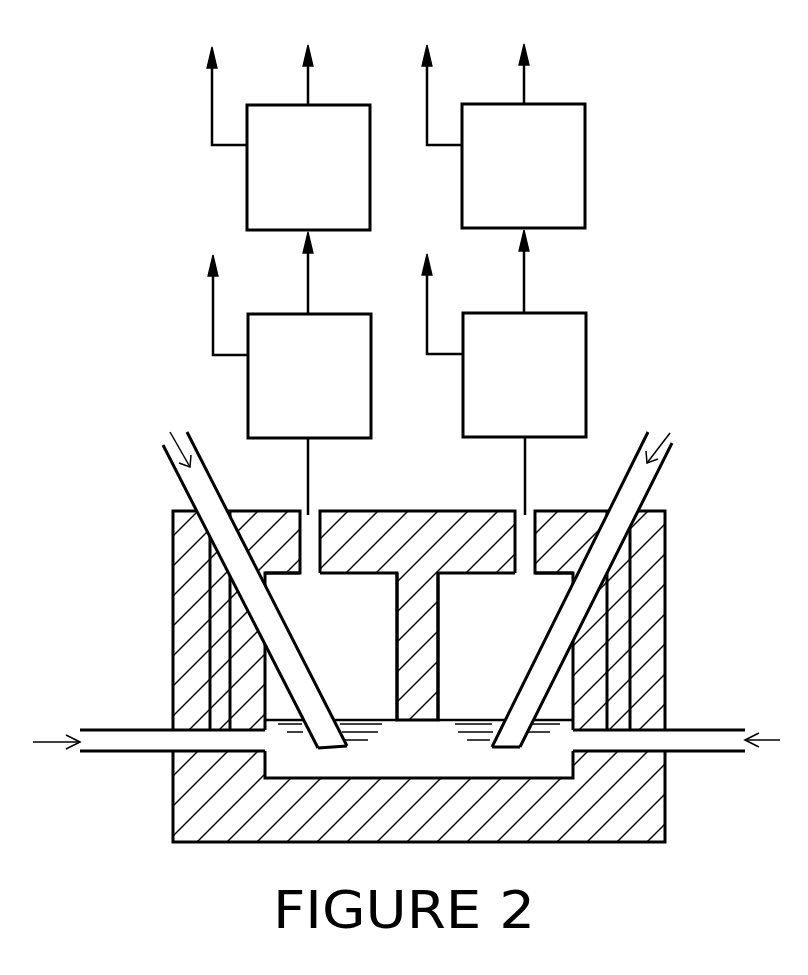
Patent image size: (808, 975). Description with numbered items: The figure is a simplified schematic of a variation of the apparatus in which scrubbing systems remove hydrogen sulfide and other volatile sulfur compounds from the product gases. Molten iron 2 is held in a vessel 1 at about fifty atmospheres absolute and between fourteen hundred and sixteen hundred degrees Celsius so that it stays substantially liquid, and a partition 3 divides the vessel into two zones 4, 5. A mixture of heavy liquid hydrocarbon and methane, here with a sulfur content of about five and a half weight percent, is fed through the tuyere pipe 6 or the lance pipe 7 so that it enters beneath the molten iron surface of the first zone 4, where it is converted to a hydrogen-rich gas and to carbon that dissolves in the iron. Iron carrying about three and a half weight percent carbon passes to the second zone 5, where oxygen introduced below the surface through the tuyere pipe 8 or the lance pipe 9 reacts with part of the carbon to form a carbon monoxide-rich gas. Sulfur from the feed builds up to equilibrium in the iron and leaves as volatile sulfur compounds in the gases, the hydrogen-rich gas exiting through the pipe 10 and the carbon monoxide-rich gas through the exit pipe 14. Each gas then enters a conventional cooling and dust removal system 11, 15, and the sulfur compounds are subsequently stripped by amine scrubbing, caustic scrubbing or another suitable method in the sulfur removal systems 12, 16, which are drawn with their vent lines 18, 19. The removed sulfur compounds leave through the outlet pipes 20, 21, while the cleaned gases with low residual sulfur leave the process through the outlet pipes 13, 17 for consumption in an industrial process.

The vessel 1 is at (430, 825).
The molten iron 2 is at (345, 717).
The partition 3 is at (420, 607).
The zone 4 is at (331, 646).
The zone 5 is at (505, 646).
The tuyere pipe 6 is at (117, 753).
The lance pipe 7 is at (162, 437).
The tuyere pipe 8 is at (693, 752).
The lance pipe 9 is at (672, 435).
The pipe 10 is at (308, 471).
The cooling and dust removal system 11 is at (371, 413).
The sulfur removal system 12 is at (370, 188).
The outlet pipe 13 is at (308, 80).
The exit pipe 14 is at (525, 471).
The cooling and dust removal system 15 is at (586, 412).
The sulfur removal system 16 is at (585, 188).
The outlet pipe 17 is at (524, 80).
The first separator vent 18 is at (213, 291).
The second separator vent 19 is at (427, 289).
The outlet pipe 20 is at (212, 80).
The outlet pipe 21 is at (427, 80).